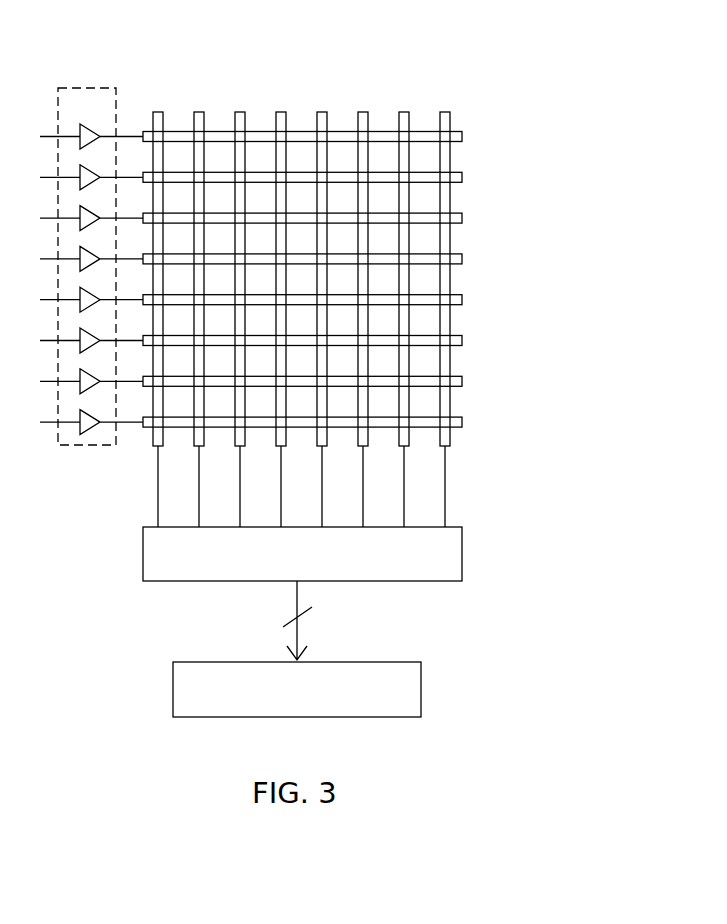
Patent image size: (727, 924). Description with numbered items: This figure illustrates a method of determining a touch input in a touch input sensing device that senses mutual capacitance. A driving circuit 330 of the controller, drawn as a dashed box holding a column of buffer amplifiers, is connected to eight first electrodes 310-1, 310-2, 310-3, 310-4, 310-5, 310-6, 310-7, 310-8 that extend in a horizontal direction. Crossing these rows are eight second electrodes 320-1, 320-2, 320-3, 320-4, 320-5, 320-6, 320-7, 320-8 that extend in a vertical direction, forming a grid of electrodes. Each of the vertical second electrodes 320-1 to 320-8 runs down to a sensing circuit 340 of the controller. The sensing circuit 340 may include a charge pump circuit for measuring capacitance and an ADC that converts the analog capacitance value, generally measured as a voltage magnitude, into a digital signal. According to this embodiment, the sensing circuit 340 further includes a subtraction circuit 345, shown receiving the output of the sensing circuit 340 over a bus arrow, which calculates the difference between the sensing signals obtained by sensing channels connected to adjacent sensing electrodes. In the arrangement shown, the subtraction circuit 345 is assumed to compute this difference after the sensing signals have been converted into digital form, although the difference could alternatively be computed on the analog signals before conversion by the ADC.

The first electrode 310-1 is at (462, 136).
The first electrode 310-2 is at (462, 177).
The first electrode 310-3 is at (462, 218).
The first electrode 310-4 is at (462, 259).
The first electrode 310-5 is at (462, 300).
The first electrode 310-6 is at (462, 340).
The first electrode 310-7 is at (462, 381).
The first electrode 310-8 is at (462, 422).
The second electrode 320-1 is at (158, 112).
The second electrode 320-2 is at (199, 112).
The second electrode 320-3 is at (240, 112).
The second electrode 320-4 is at (281, 112).
The second electrode 320-5 is at (322, 112).
The second electrode 320-6 is at (363, 112).
The second electrode 320-7 is at (404, 112).
The second electrode 320-8 is at (445, 112).
The driving circuit 330 is at (87, 445).
The sensing circuit 340 is at (462, 553).
The subtraction circuit 345 is at (422, 682).